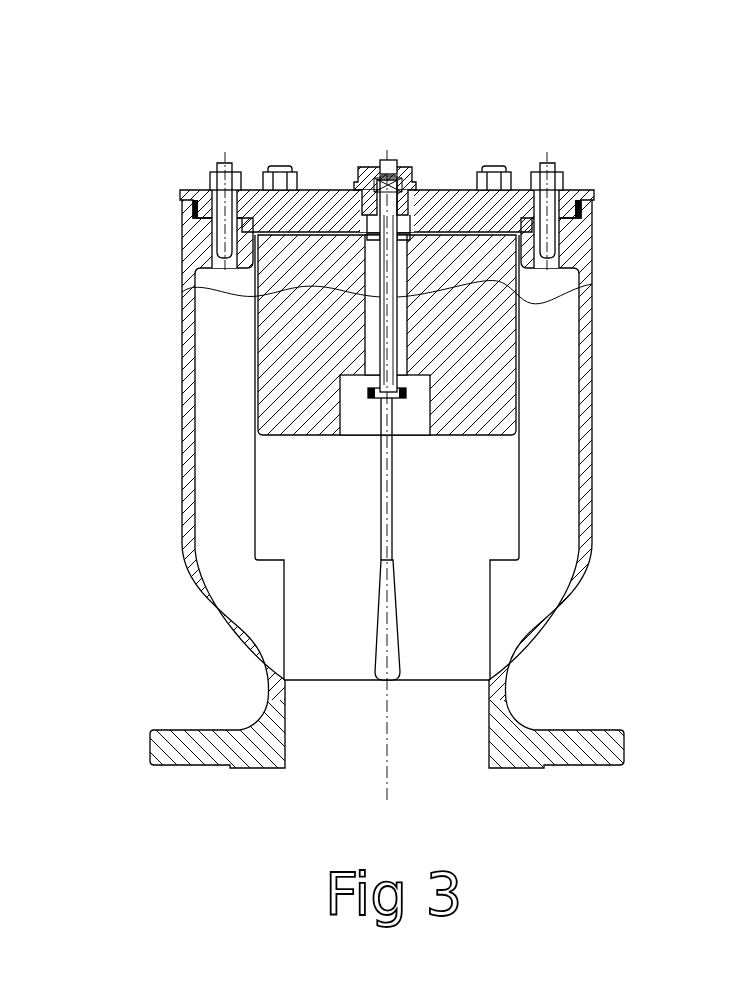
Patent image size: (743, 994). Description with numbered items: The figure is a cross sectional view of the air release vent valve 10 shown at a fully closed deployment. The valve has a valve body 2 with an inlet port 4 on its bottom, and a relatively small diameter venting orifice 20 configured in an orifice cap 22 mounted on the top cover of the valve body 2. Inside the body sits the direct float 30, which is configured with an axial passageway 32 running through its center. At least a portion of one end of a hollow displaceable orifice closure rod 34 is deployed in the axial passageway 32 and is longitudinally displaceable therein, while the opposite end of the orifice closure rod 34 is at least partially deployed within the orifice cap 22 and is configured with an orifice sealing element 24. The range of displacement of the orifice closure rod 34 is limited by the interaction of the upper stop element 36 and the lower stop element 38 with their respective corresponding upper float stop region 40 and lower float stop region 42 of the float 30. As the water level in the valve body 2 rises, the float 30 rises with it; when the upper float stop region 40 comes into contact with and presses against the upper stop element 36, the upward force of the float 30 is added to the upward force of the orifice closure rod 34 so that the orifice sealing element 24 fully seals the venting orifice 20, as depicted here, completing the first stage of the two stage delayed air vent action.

The valve assembly 10 is at (178, 122).
The valve body 2 is at (585, 445).
The inlet port 4 is at (320, 728).
The venting orifice 20 is at (383, 170).
The orifice cap 22 is at (403, 170).
The orifice sealing element 24 is at (358, 170).
The direct float 30 is at (305, 420).
The axial passageway 32 is at (400, 323).
The displaceable orifice closure rod 34 is at (370, 330).
The upper stop element 36 is at (573, 217).
The lower stop element 38 is at (376, 392).
The upper float stop region 40 is at (233, 206).
The lower float stop region 42 is at (522, 297).